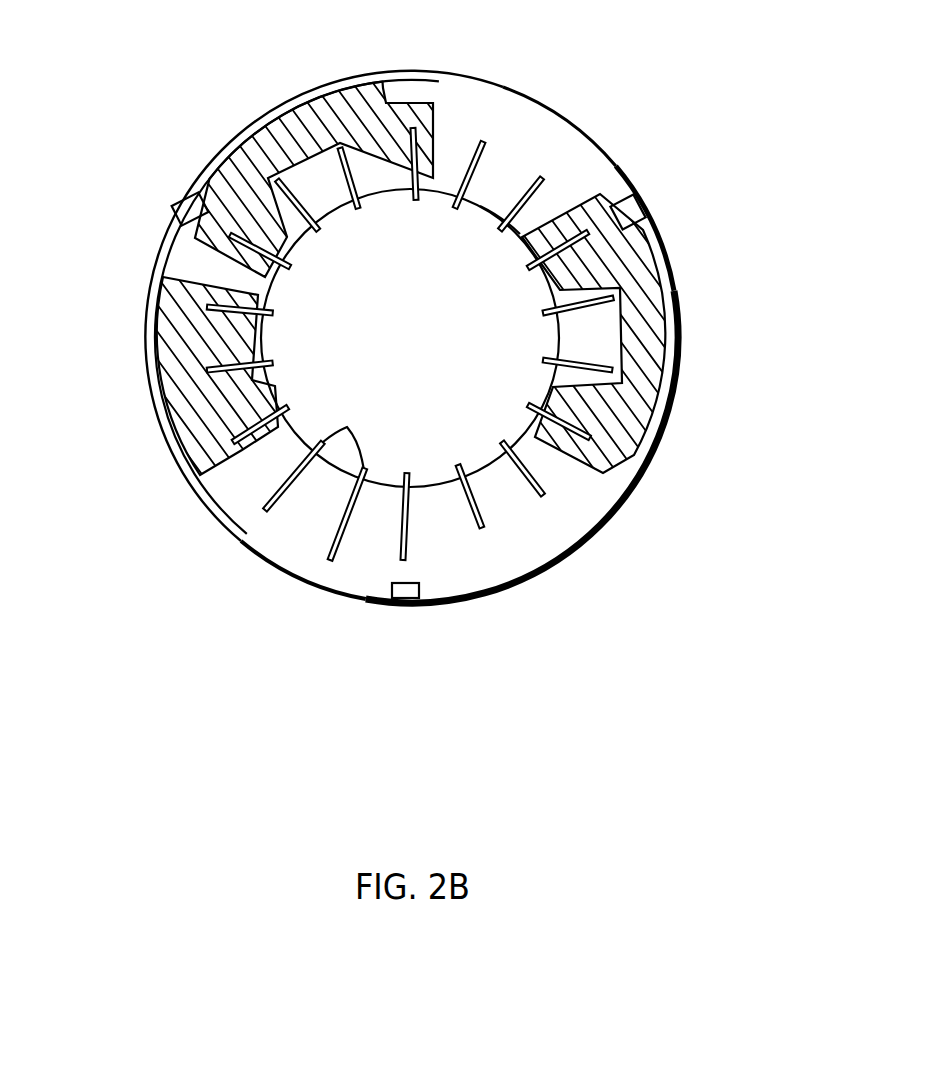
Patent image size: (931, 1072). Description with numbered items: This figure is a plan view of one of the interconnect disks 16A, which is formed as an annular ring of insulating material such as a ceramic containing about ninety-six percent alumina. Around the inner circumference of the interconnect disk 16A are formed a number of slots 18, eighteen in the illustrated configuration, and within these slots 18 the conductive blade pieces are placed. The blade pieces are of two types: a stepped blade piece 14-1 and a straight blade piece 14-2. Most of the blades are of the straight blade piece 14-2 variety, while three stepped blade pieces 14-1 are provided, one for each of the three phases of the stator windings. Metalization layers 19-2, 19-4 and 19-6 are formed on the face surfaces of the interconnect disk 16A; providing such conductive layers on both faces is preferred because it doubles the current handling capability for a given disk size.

The interconnect disk 16A is at (795, 30).
The metalization layer 19-4 is at (268, 122).
The metalization layer 19-6 is at (203, 416).
The metalization layer 19-2 is at (640, 266).
The stepped blade piece 14-1 is at (347, 427).
The straight blade piece 14-2 is at (452, 208).
The slot 18 is at (487, 142).